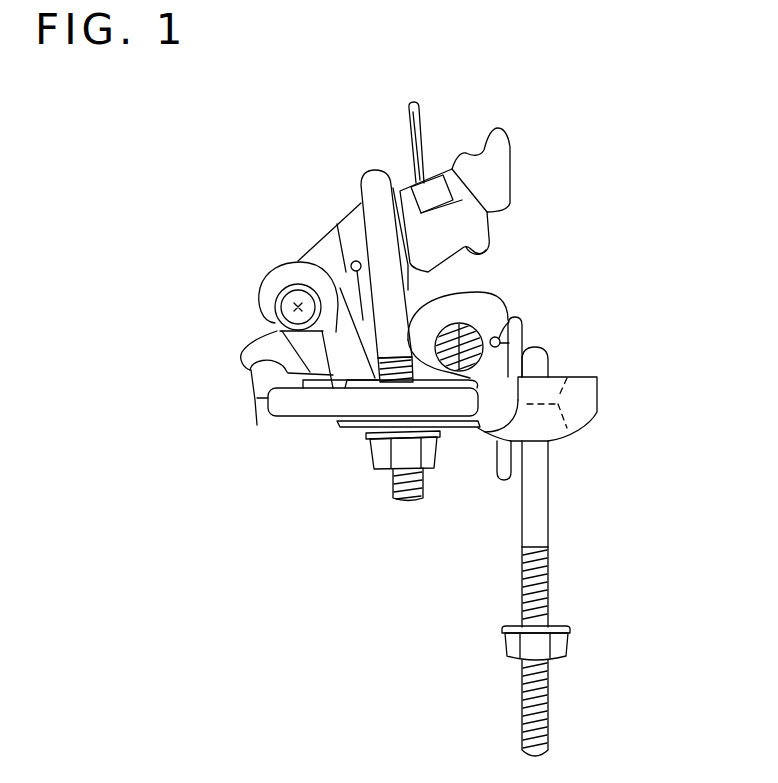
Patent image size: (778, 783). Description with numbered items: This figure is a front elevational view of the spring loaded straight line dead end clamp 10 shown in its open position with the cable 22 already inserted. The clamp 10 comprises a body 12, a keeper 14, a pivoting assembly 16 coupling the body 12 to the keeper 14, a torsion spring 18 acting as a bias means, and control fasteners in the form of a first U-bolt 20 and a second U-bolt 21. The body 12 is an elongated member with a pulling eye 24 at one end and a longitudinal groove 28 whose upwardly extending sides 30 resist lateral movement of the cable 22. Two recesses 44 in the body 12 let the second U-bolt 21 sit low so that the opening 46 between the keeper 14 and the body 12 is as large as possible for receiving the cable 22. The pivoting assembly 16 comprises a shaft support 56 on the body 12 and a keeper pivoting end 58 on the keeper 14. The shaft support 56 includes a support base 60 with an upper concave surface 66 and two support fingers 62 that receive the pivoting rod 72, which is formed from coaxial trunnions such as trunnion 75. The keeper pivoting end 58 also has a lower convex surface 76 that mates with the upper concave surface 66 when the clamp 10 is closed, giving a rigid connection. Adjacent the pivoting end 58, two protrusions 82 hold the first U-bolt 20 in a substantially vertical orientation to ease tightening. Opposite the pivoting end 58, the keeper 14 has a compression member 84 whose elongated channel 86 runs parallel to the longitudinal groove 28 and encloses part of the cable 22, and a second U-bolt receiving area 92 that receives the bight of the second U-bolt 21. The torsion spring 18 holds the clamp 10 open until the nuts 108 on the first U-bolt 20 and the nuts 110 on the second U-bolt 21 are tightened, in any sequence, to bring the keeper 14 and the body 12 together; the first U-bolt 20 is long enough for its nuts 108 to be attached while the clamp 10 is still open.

The spring loaded straight line dead end clamp 10 is at (223, 184).
The body 12 is at (600, 413).
The keeper 14 is at (510, 161).
The pivoting assembly 16 is at (243, 323).
The torsion spring 18 is at (283, 332).
The first U-bolt 20 is at (375, 168).
The second U-bolt 21 is at (549, 716).
The cable 22 is at (458, 371).
The pulling eye 24 is at (320, 402).
The longitudinal groove 28 is at (519, 339).
The sides 30 is at (495, 337).
The recesses 44 is at (571, 442).
The opening 46 is at (511, 266).
The shaft support 56 is at (242, 404).
The keeper pivoting end 58 is at (297, 246).
The support base 60 is at (256, 426).
The support fingers 62 is at (262, 277).
The upper concave surface 66 is at (265, 362).
The pivoting rod 72 is at (296, 303).
The trunnion 75 is at (283, 318).
The lower convex surface 76 is at (407, 315).
The protrusions 82 is at (345, 246).
The compression member 84 is at (468, 228).
The elongated channel 86 is at (473, 250).
The second U-bolt receiving area 92 is at (482, 142).
The nuts 108 is at (373, 456).
The nuts 110 is at (501, 640).